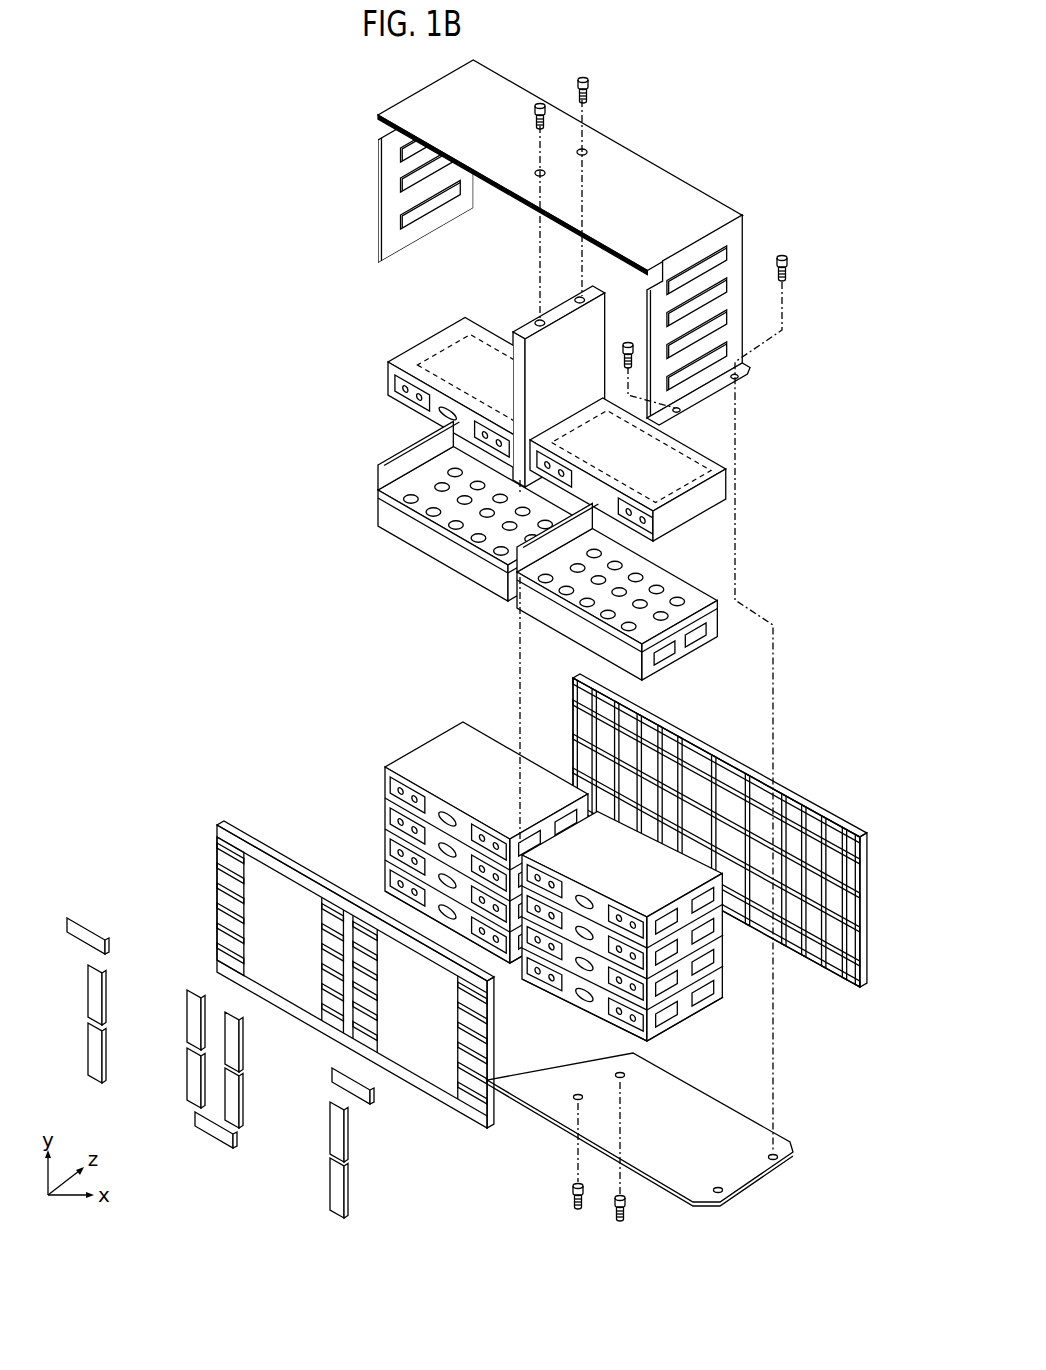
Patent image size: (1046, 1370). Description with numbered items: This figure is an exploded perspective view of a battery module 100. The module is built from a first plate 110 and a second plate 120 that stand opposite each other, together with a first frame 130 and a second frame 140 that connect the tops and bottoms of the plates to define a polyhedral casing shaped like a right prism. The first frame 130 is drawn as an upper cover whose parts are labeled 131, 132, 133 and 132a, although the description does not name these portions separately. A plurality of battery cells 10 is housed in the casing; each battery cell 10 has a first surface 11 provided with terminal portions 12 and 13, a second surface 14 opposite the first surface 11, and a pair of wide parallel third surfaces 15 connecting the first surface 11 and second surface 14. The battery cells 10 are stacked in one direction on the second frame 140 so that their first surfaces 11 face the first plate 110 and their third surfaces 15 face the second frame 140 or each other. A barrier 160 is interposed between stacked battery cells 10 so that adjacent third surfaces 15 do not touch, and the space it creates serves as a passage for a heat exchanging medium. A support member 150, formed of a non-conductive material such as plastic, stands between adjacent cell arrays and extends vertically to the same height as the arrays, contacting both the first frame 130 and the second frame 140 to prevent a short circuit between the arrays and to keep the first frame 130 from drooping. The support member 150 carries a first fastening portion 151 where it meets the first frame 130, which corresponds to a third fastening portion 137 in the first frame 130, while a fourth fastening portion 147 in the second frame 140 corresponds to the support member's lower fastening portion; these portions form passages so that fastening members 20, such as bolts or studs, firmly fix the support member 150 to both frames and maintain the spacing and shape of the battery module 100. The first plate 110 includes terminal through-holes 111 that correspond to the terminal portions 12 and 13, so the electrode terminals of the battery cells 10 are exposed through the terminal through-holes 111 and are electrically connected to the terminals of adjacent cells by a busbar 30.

The battery module 100 is at (467, 624).
The fastening member 20 is at (587, 79).
The third fastening portion 137 is at (545, 170).
The top plate 131 is at (706, 200).
The side plate 132 is at (734, 307).
The front plate 133 is at (593, 238).
The first frame 130 is at (623, 242).
The first fastening portion 151 is at (579, 297).
The second surface 14 is at (452, 325).
The support member 150 is at (526, 364).
The battery cell 10 is at (570, 653).
The terminal portion 12 is at (398, 381).
The first surface 11 is at (432, 397).
The terminal portion 13 is at (489, 439).
The barrier 160 is at (376, 492).
The third surface 15 is at (665, 488).
The fastening flange 132a is at (718, 390).
The second plate 120 is at (815, 756).
The first plate 110 is at (329, 942).
The terminal through-hole 111 is at (222, 900).
The busbar 30 is at (100, 997).
The fourth fastening portion 147 is at (582, 1096).
The second frame 140 is at (640, 1116).